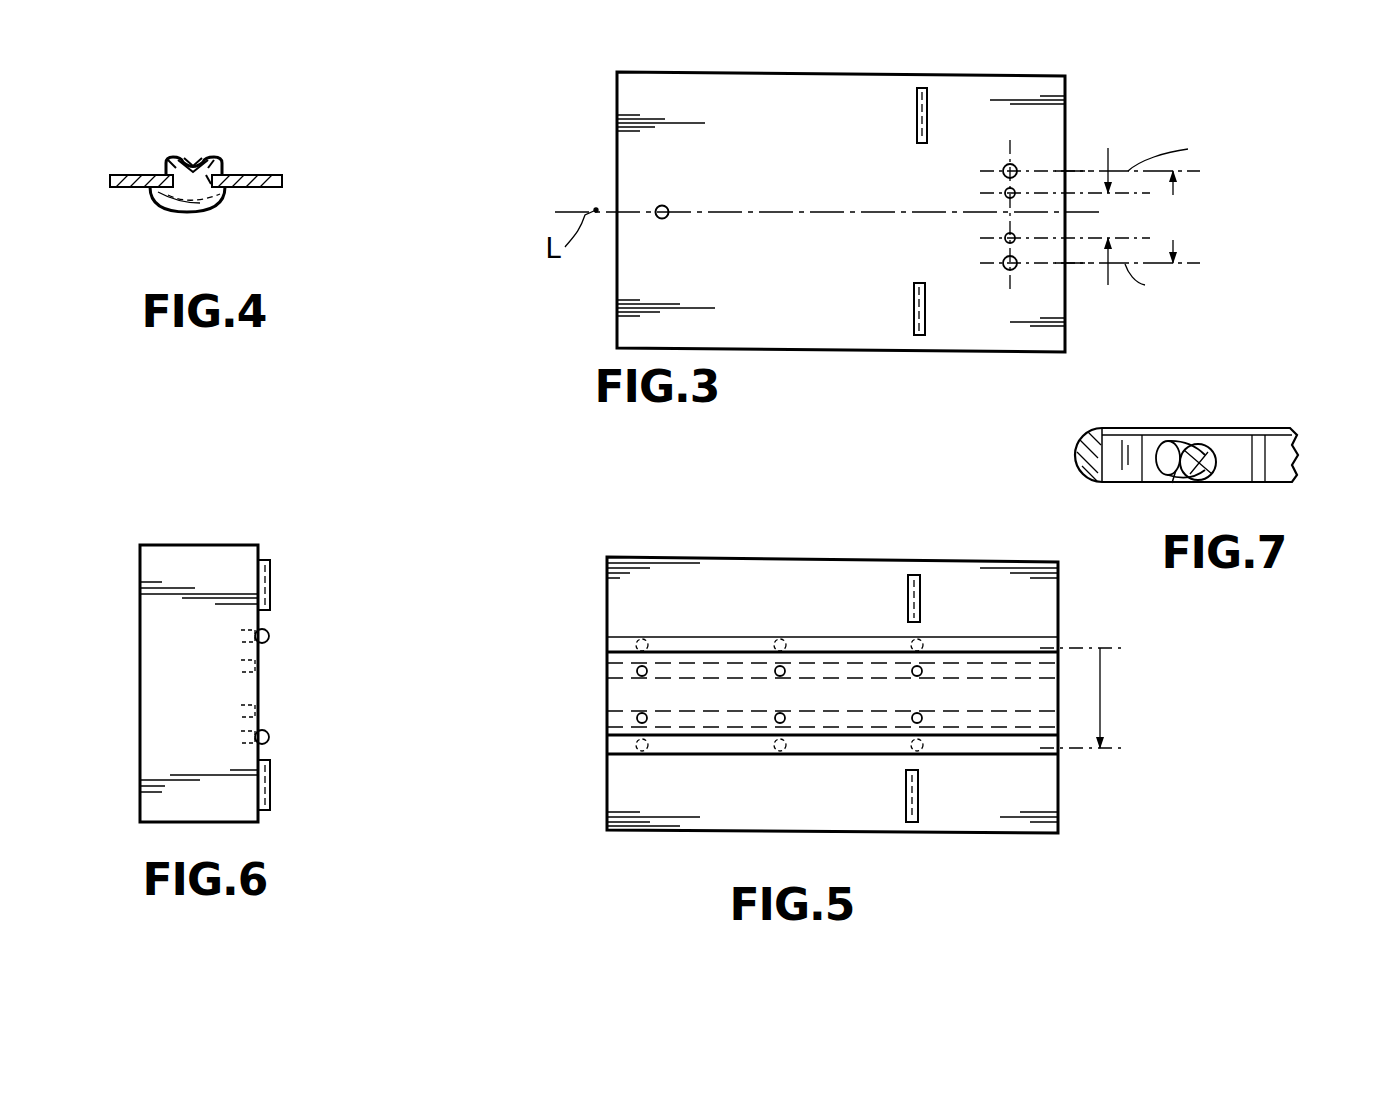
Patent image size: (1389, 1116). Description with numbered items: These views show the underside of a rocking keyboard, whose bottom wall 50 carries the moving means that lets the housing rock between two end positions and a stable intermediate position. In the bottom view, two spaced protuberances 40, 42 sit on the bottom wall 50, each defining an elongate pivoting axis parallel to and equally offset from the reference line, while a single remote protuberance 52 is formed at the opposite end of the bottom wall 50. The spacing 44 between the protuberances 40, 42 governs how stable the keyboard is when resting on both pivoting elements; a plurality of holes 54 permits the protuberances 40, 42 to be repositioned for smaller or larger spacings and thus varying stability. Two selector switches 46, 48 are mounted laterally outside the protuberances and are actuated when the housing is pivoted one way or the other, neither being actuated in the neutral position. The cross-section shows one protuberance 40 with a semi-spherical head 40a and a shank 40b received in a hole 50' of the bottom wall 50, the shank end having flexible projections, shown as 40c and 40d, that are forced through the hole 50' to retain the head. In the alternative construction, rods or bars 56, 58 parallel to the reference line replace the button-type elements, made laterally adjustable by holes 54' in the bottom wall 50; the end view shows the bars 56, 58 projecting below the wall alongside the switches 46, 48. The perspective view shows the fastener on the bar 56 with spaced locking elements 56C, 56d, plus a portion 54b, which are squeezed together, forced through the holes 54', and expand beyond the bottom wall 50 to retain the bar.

In FIG. 4, the protuberance 40 is at (232, 200).
In FIG. 3, the protuberance 40 is at (1016, 168).
In FIG. 4, the head 40a is at (198, 213).
In FIG. 4, the shank 40b is at (214, 179).
In FIG. 4, the rivet head portion 40c is at (176, 159).
In FIG. 4, the rivet head portion 40d is at (214, 158).
In FIG. 3, the protuberance 42 is at (1016, 268).
In FIG. 3, the spacing 44 is at (1180, 192).
In FIG. 5, the spacing 44 is at (1106, 702).
In FIG. 3, the selector switch 46 is at (921, 88).
In FIG. 6, the selector switch 46 is at (272, 573).
In FIG. 5, the selector switch 46 is at (917, 576).
In FIG. 3, the selector switch 48 is at (917, 336).
In FIG. 6, the selector switch 48 is at (272, 790).
In FIG. 5, the selector switch 48 is at (917, 822).
In FIG. 4, the bottom wall 50 is at (168, 150).
In FIG. 3, the bottom wall 50 is at (827, 185).
In FIG. 6, the bottom wall 50 is at (199, 683).
In FIG. 5, the bottom wall 50 is at (794, 695).
In FIG. 4, the hole 50' is at (134, 218).
In FIG. 3, the protuberance 52 is at (657, 207).
In FIG. 3, the holes 54 is at (1033, 212).
In FIG. 5, the holes 54' is at (830, 698).
In FIG. 7, the pin portion 54b is at (1171, 483).
In FIG. 7, the bar 56 is at (1236, 432).
In FIG. 6, the bar 56 is at (270, 632).
In FIG. 5, the bar 56 is at (726, 638).
In FIG. 7, the locking element 56C is at (1215, 457).
In FIG. 7, the locking element 56d is at (1210, 478).
In FIG. 6, the bar 58 is at (270, 734).
In FIG. 5, the bar 58 is at (1016, 748).